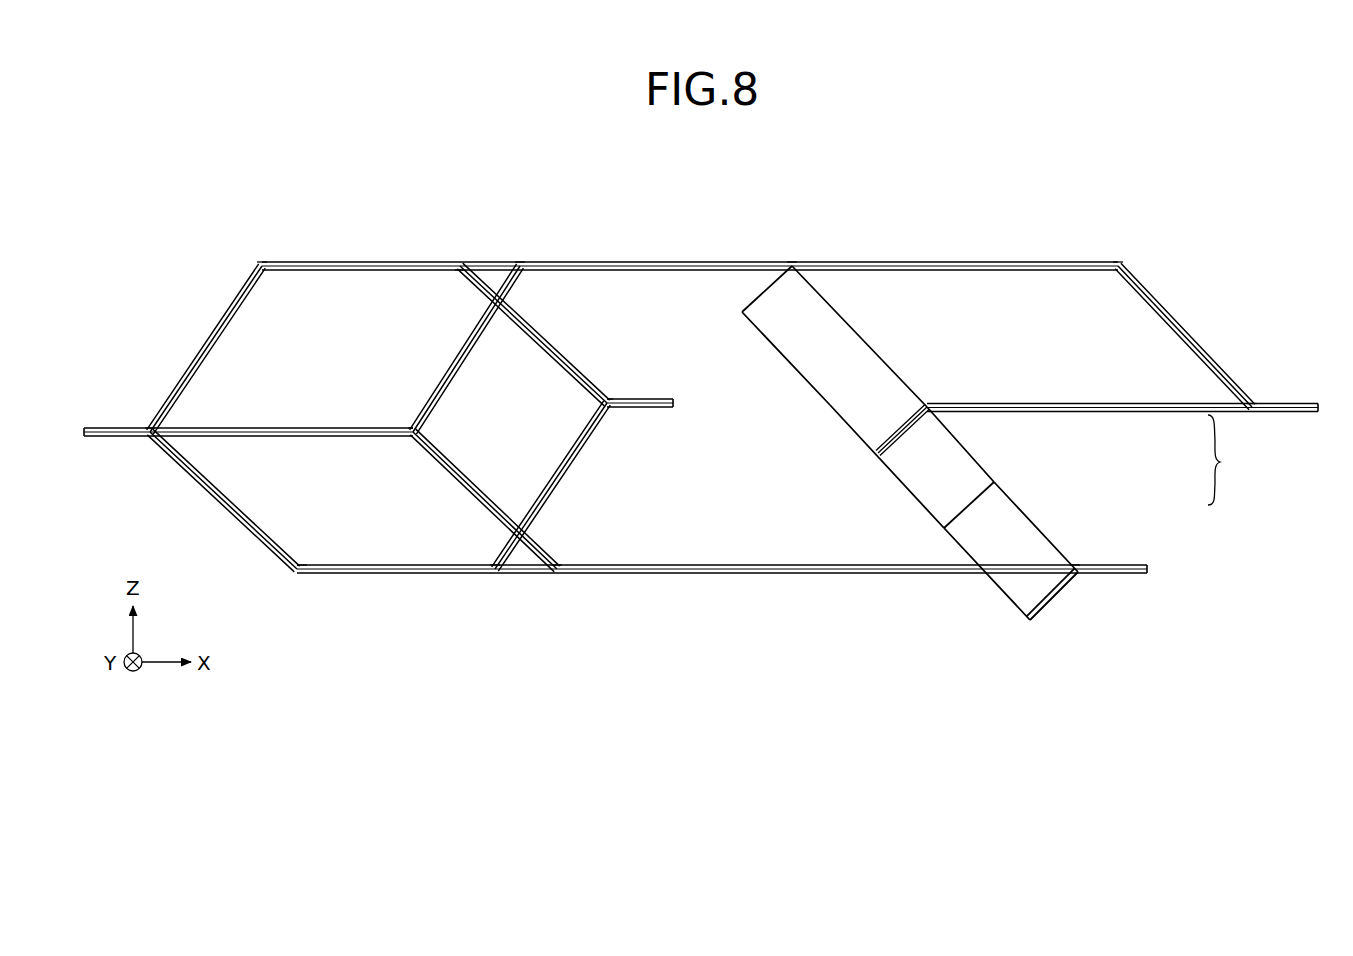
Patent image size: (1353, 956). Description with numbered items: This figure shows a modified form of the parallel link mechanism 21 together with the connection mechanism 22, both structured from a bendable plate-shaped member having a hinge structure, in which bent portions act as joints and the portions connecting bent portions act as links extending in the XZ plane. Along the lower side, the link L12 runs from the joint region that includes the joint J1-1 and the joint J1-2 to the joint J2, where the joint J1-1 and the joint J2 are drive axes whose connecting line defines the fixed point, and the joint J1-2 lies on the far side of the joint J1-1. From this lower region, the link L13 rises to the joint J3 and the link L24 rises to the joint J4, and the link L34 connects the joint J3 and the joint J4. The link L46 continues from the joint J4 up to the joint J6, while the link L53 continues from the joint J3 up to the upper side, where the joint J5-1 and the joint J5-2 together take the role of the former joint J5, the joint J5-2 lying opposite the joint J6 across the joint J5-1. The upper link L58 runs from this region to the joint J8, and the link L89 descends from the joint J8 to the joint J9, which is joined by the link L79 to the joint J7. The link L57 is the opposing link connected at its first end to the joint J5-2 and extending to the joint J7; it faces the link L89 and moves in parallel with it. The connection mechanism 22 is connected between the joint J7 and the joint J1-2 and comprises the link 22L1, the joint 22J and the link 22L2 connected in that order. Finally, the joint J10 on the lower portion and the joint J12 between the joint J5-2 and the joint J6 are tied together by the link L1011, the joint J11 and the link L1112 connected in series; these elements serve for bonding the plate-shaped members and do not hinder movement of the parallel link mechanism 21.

The parallel link mechanism 21 is at (189, 202).
The connection mechanism 22 is at (1042, 512).
The link 22L1 is at (943, 448).
The joint 22J is at (998, 477).
The link 22L2 is at (1001, 503).
The link L12 is at (378, 574).
The link L13 is at (462, 478).
The link L24 is at (240, 502).
The link L34 is at (283, 427).
The link L46 is at (198, 357).
The link L53 is at (462, 357).
The link L57 is at (872, 358).
The link L58 is at (844, 266).
The link L79 is at (1055, 404).
The link L89 is at (1205, 352).
The link L1011 is at (563, 471).
The link L1112 is at (562, 357).
The joint J1-1 is at (559, 563).
The joint J1-2 is at (1078, 563).
The joint J2 is at (299, 563).
The joint J3 is at (412, 426).
The joint J4 is at (149, 427).
The joint J5-1 is at (518, 262).
The joint J5-2 is at (789, 262).
The joint J6 is at (261, 262).
The joint J7 is at (930, 403).
The joint J8 is at (1121, 262).
The joint J9 is at (1255, 403).
The joint J10 is at (491, 563).
The joint J11 is at (610, 400).
The joint J12 is at (457, 277).